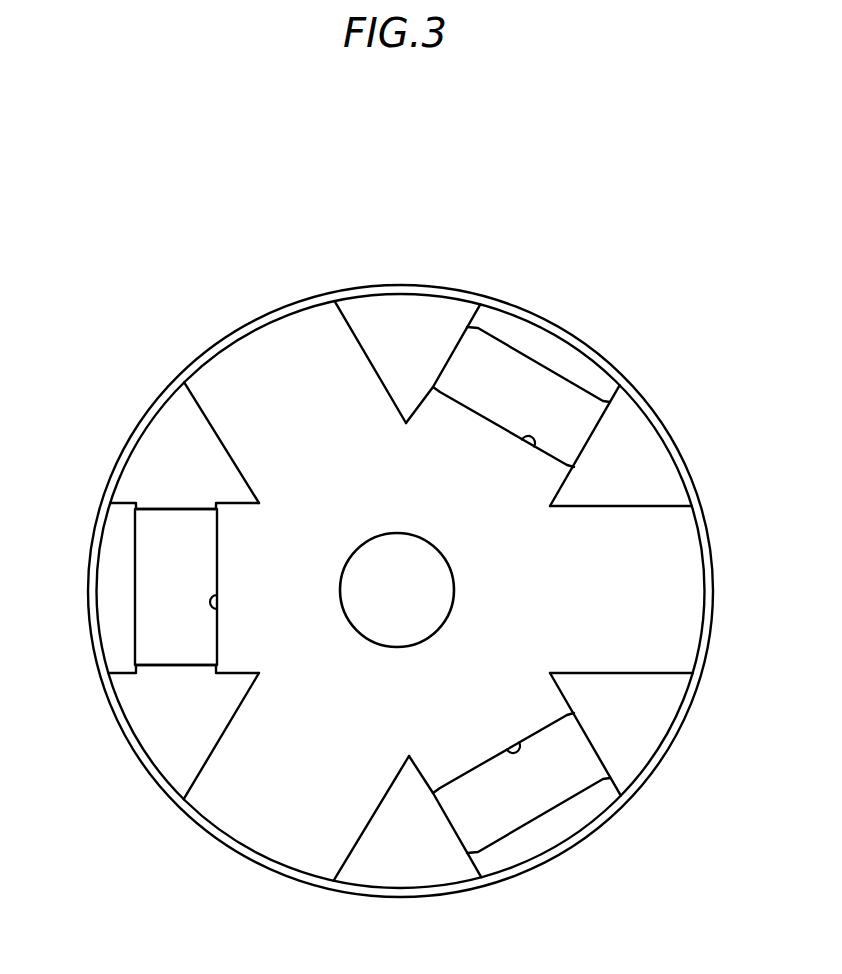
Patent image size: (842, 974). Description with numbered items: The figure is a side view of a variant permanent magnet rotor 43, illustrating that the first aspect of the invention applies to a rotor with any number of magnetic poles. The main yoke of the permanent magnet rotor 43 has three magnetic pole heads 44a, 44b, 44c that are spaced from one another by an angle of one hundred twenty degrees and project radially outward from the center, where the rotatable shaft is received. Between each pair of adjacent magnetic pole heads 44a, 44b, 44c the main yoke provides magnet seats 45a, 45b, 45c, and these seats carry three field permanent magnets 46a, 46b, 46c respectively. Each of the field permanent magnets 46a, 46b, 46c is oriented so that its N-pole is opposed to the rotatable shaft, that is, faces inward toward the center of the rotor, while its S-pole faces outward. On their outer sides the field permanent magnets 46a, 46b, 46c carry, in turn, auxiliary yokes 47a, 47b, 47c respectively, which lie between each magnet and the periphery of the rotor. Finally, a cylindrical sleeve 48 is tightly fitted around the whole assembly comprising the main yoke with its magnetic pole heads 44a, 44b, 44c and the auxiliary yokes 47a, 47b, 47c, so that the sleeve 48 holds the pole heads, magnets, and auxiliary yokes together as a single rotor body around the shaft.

The permanent magnet rotor 43 is at (588, 224).
The magnetic pole head 44a is at (275, 337).
The magnetic pole head 44b is at (686, 598).
The magnetic pole head 44c is at (277, 832).
The magnet seat 45a is at (532, 452).
The magnet seat 45b is at (520, 739).
The magnet seat 45c is at (221, 608).
The field permanent magnet 46a is at (563, 424).
The field permanent magnet 46b is at (572, 748).
The field permanent magnet 46c is at (180, 648).
The auxiliary yoke 47a is at (590, 372).
The auxiliary yoke 47b is at (590, 802).
The auxiliary yoke 47c is at (113, 642).
The cylindrical sleeve 48 is at (694, 700).